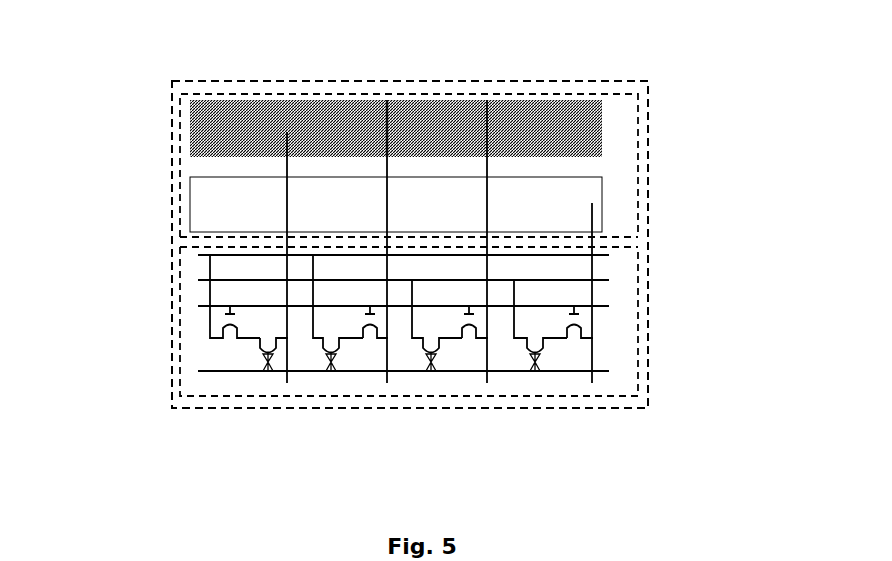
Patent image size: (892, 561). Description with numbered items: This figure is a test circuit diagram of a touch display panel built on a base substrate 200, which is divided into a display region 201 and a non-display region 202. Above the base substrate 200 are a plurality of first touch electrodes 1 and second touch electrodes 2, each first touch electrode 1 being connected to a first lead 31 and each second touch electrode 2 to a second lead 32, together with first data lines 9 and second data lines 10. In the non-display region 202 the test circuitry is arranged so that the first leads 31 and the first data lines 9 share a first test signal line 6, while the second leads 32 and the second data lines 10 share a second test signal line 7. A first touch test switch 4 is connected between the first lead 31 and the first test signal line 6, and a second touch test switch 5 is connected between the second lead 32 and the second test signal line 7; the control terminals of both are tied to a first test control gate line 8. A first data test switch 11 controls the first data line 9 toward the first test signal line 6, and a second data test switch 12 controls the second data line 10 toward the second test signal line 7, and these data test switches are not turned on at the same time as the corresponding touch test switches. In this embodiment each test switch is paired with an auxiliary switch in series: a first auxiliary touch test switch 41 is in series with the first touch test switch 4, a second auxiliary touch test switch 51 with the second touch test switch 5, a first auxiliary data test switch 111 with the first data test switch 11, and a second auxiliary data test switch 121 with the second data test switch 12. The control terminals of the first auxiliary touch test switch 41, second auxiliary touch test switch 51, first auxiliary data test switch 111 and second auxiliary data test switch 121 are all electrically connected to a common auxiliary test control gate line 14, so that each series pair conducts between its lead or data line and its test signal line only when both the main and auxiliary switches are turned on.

The base substrate 200 is at (593, 82).
The display region 201 is at (255, 95).
The non-display region 202 is at (240, 396).
The first touch electrode 1 is at (431, 183).
The second touch electrode 2 is at (368, 99).
The first lead 31 is at (661, 270).
The second lead 32 is at (364, 197).
The first touch test switch 4 is at (653, 304).
The first auxiliary touch test switch 41 is at (593, 366).
The second touch test switch 5 is at (201, 333).
The second auxiliary touch test switch 51 is at (302, 394).
The first test signal line 6 is at (328, 227).
The second test signal line 7 is at (429, 157).
The first test control gate line 8 is at (348, 279).
The first data line 9 is at (529, 210).
The second data line 10 is at (433, 207).
The first data test switch 11 is at (577, 281).
The first auxiliary data test switch 111 is at (492, 367).
The second data test switch 12 is at (422, 378).
The second auxiliary data test switch 121 is at (366, 352).
The auxiliary test control gate line 14 is at (449, 344).